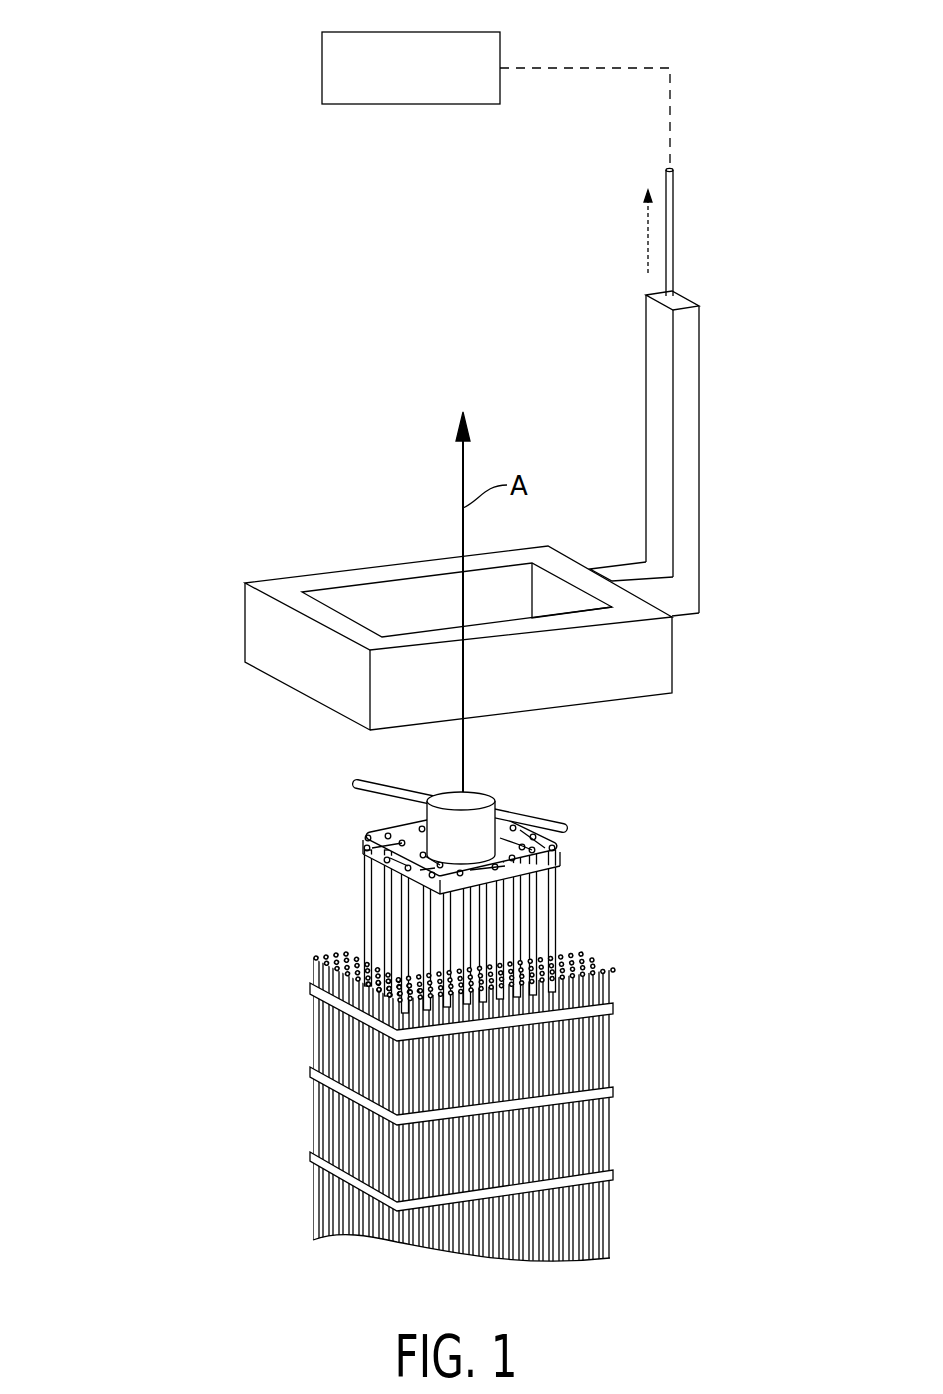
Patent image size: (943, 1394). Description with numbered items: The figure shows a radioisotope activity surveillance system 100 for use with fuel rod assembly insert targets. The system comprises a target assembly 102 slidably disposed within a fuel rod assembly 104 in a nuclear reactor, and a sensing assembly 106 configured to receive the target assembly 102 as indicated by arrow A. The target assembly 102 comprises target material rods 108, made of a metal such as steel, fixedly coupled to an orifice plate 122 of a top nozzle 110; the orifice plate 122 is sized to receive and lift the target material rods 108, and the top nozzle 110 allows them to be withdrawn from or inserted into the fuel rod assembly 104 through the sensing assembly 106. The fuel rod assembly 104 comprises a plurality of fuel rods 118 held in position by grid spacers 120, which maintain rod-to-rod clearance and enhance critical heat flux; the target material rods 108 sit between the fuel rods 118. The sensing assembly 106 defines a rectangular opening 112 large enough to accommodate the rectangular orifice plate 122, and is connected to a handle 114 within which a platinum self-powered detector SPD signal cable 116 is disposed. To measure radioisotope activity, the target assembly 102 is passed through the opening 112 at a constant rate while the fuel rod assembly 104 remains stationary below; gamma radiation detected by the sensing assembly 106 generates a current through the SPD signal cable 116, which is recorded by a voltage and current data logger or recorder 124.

The radioisotope activity surveillance system 100 is at (140, 79).
The target assembly 102 is at (567, 801).
The fuel rod assembly 104 is at (513, 1060).
The sensing assembly 106 is at (436, 587).
The target material rods 108 is at (365, 927).
The top nozzle 110 is at (343, 846).
The opening 112 is at (382, 602).
The handle 114 is at (700, 443).
The SPD signal cable 116 is at (675, 238).
The fuel rods 118 is at (363, 1040).
The grid spacers 120 is at (308, 1070).
The orifice plate 122 is at (451, 851).
The recorder 124 is at (500, 46).